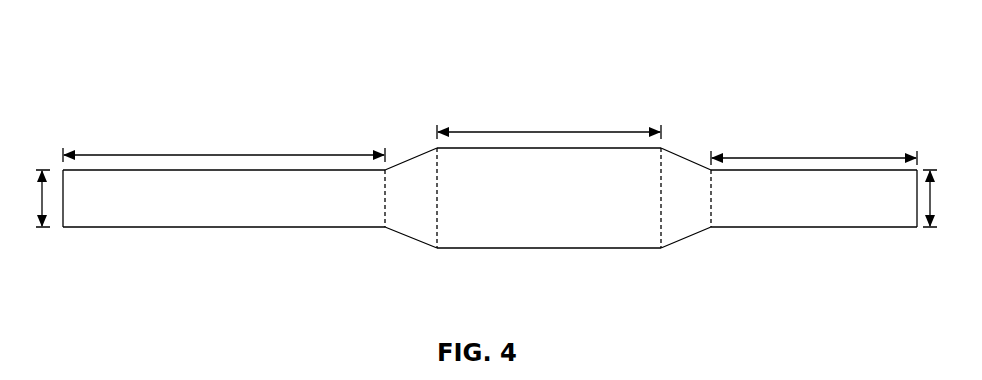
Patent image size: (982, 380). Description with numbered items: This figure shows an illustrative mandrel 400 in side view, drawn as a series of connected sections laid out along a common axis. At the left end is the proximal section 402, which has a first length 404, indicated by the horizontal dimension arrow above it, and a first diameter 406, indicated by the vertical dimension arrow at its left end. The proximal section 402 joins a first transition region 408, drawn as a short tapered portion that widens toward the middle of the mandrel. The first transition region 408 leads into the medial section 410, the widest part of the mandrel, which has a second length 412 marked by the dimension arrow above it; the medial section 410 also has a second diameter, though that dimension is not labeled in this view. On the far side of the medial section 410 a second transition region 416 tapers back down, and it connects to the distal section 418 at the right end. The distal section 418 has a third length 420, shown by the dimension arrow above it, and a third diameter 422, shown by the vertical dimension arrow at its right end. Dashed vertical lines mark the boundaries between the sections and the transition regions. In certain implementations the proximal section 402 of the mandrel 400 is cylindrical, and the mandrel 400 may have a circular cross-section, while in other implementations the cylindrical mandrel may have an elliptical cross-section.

The mandrel 400 is at (118, 52).
The proximal section 402 is at (265, 228).
The first length 404 is at (222, 153).
The first diameter 406 is at (38, 198).
The first transition region 408 is at (410, 158).
The medial section 410 is at (552, 249).
The second length 412 is at (542, 130).
The second transition region 416 is at (687, 157).
The distal section 418 is at (823, 228).
The third length 420 is at (820, 156).
The third diameter 422 is at (932, 207).